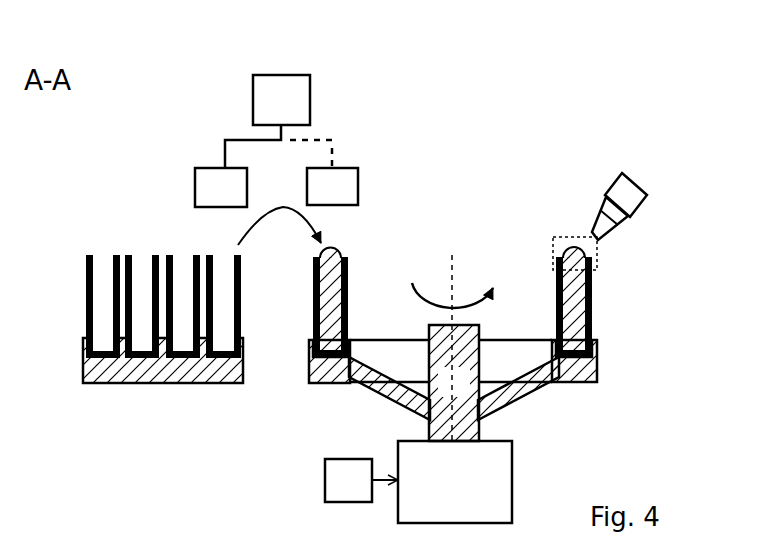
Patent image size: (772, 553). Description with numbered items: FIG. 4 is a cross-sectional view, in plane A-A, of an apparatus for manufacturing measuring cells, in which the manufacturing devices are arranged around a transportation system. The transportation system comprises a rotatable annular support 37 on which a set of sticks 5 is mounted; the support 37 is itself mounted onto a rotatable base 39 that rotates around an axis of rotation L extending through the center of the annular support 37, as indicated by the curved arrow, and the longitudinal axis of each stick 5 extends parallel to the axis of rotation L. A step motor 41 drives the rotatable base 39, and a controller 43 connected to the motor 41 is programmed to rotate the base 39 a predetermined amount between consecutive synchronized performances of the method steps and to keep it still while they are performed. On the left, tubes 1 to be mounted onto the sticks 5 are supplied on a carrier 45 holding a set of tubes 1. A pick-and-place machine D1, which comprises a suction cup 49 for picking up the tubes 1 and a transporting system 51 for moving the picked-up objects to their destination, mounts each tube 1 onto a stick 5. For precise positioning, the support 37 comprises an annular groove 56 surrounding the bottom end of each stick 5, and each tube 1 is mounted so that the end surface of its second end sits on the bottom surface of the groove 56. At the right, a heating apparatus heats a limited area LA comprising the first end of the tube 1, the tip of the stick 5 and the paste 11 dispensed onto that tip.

The tube 1 is at (89, 276).
The stick 5 is at (330, 323).
The paste 11 is at (572, 249).
The rotatable annular support 37 is at (590, 372).
The rotatable base 39 is at (454, 383).
The step motor 41 is at (455, 482).
The controller 43 is at (361, 480).
The carrier 45 is at (163, 373).
The suction cup 49 is at (276, 187).
The transporting system 51 is at (280, 121).
The annular groove 56 is at (316, 348).
The pick-and-place machine D1 is at (216, 128).
The axis of rotation L is at (449, 292).
The limited area LA is at (598, 245).